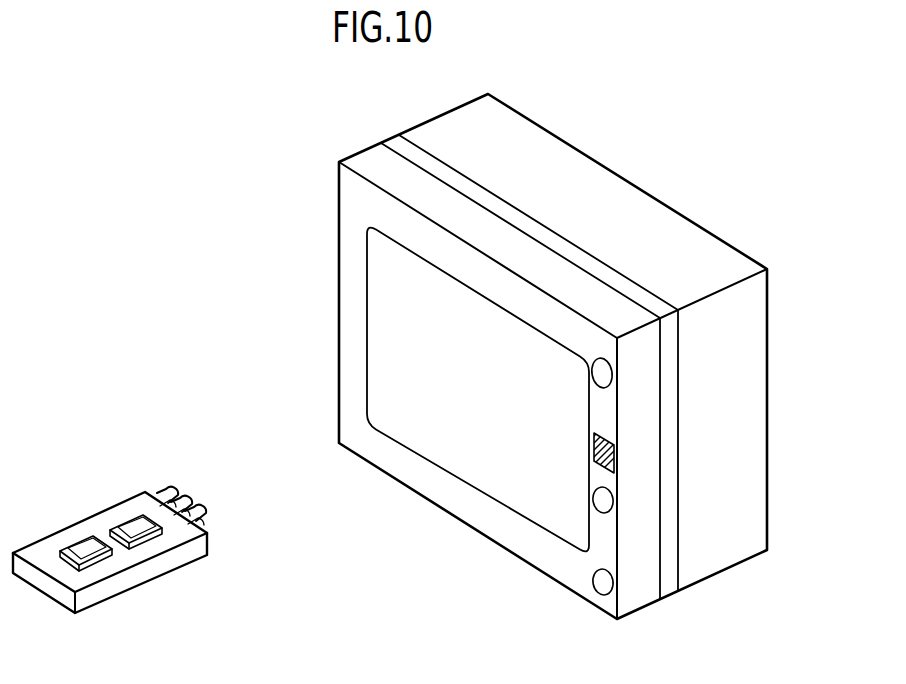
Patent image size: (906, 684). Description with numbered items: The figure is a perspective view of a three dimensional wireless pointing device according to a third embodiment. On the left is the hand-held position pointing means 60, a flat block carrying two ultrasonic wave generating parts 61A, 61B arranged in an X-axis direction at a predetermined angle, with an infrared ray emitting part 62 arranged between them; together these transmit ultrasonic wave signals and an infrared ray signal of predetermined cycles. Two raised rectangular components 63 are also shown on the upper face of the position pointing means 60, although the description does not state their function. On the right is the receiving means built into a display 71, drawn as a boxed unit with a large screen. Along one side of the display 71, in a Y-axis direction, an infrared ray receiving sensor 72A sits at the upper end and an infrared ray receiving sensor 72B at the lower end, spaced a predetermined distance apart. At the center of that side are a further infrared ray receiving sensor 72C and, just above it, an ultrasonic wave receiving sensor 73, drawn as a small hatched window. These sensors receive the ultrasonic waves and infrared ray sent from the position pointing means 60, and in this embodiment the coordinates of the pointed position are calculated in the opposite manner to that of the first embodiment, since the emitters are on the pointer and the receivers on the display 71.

The position pointing means 60 is at (28, 553).
The ultrasonic wave generating part 61A is at (164, 491).
The ultrasonic wave generating part 61B is at (207, 522).
The infrared ray emitting part 62 is at (188, 496).
The semiconductor chips 63 is at (84, 553).
The display 71 is at (767, 411).
The infrared ray receiving sensor 72A is at (604, 374).
The infrared ray receiving sensor 72B is at (605, 583).
The infrared ray receiving sensor 72C is at (605, 500).
The ultrasonic wave receiving sensor 73 is at (615, 457).